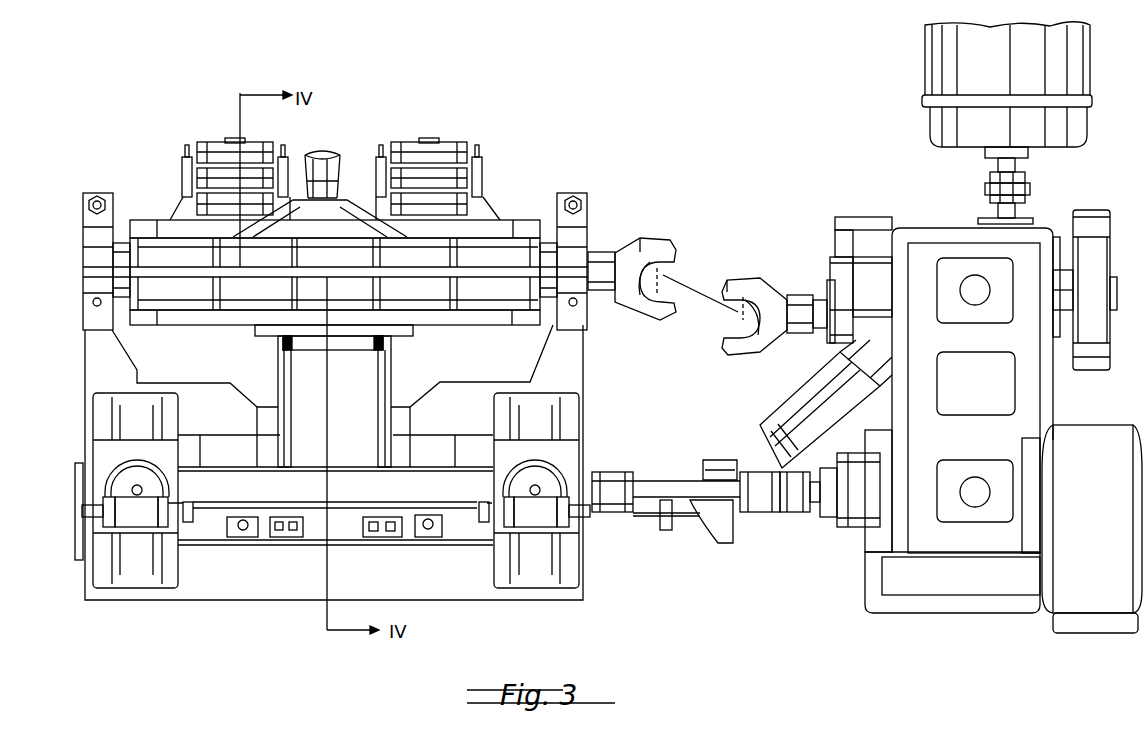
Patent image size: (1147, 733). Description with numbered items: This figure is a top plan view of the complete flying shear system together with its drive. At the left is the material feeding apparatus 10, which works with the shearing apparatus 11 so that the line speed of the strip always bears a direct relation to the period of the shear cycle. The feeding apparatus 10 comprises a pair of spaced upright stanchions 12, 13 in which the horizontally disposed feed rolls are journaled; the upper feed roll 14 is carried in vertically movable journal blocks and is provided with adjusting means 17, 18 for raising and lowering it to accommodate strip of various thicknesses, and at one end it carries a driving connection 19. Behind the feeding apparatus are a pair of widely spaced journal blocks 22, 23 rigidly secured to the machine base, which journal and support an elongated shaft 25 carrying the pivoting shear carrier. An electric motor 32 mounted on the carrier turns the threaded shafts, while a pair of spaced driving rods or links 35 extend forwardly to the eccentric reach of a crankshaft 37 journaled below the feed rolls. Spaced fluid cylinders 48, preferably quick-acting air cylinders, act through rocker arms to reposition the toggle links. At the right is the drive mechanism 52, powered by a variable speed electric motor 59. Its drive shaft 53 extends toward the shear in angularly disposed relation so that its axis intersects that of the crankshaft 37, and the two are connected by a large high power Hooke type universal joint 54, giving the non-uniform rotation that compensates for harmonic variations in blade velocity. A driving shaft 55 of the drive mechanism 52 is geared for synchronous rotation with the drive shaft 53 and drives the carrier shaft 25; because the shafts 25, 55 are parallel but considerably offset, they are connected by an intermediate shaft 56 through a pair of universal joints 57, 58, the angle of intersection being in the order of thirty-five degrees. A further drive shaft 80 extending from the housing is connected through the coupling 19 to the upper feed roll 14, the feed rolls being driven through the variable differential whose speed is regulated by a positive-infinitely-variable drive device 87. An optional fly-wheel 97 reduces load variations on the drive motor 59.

The material feeding apparatus 10 is at (250, 579).
The shearing apparatus 11 is at (496, 260).
The upright stanchion 12 is at (137, 578).
The upright stanchion 13 is at (538, 582).
The upper feed roll 14 is at (450, 467).
The adjusting means 17 is at (80, 462).
The adjusting means 18 is at (355, 512).
The driving connection 19 is at (606, 478).
The journal block 22 is at (89, 293).
The journal block 23 is at (577, 237).
The elongated shaft 25 is at (598, 262).
The electric motor 32 is at (323, 157).
The driving rods or links 35 is at (388, 370).
The crankshaft 37 is at (641, 518).
The fluid cylinders 48 is at (216, 152).
The drive mechanism 52 is at (983, 395).
The drive shaft 53 is at (736, 465).
The universal joint 54 is at (723, 530).
The driving shaft 55 is at (828, 298).
The intermediate shaft 56 is at (690, 281).
The universal joint 57 is at (661, 243).
The universal joint 58 is at (735, 287).
The variable speed electric motor 59 is at (948, 50).
The drive shaft 80 is at (818, 504).
The variable speed positive drive device 87 is at (1085, 612).
The fly-wheel 97 is at (1090, 210).